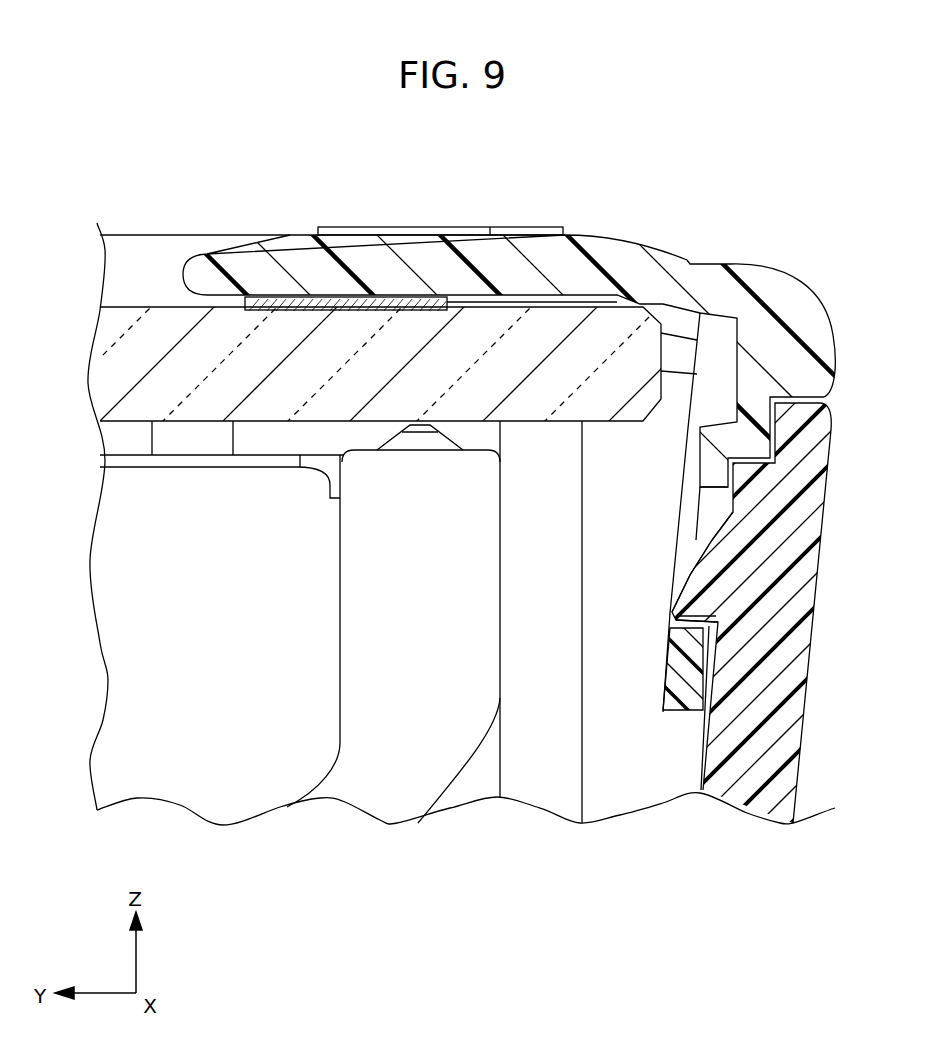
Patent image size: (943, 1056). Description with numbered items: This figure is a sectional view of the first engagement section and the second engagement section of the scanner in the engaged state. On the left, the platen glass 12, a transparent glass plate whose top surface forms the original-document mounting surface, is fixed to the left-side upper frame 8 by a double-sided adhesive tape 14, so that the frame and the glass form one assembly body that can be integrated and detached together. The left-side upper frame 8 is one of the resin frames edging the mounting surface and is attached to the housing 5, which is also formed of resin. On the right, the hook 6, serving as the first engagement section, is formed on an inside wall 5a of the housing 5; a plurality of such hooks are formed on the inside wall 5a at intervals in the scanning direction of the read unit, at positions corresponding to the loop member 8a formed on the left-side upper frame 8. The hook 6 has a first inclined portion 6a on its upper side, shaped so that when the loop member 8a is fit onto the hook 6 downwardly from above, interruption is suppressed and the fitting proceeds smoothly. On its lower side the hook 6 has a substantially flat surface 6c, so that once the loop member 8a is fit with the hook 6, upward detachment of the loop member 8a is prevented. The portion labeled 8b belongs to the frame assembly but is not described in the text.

The housing 5 is at (808, 660).
The inside wall 5a is at (703, 793).
The hook 6 is at (680, 598).
The first inclined portion 6a is at (698, 545).
The surface 6c is at (712, 636).
The left-side upper frame 8 is at (638, 262).
The loop member 8a is at (700, 728).
The cover flange portion 8b is at (688, 506).
The platen glass 12 is at (162, 332).
The double-sided adhesive tape 14 is at (405, 297).